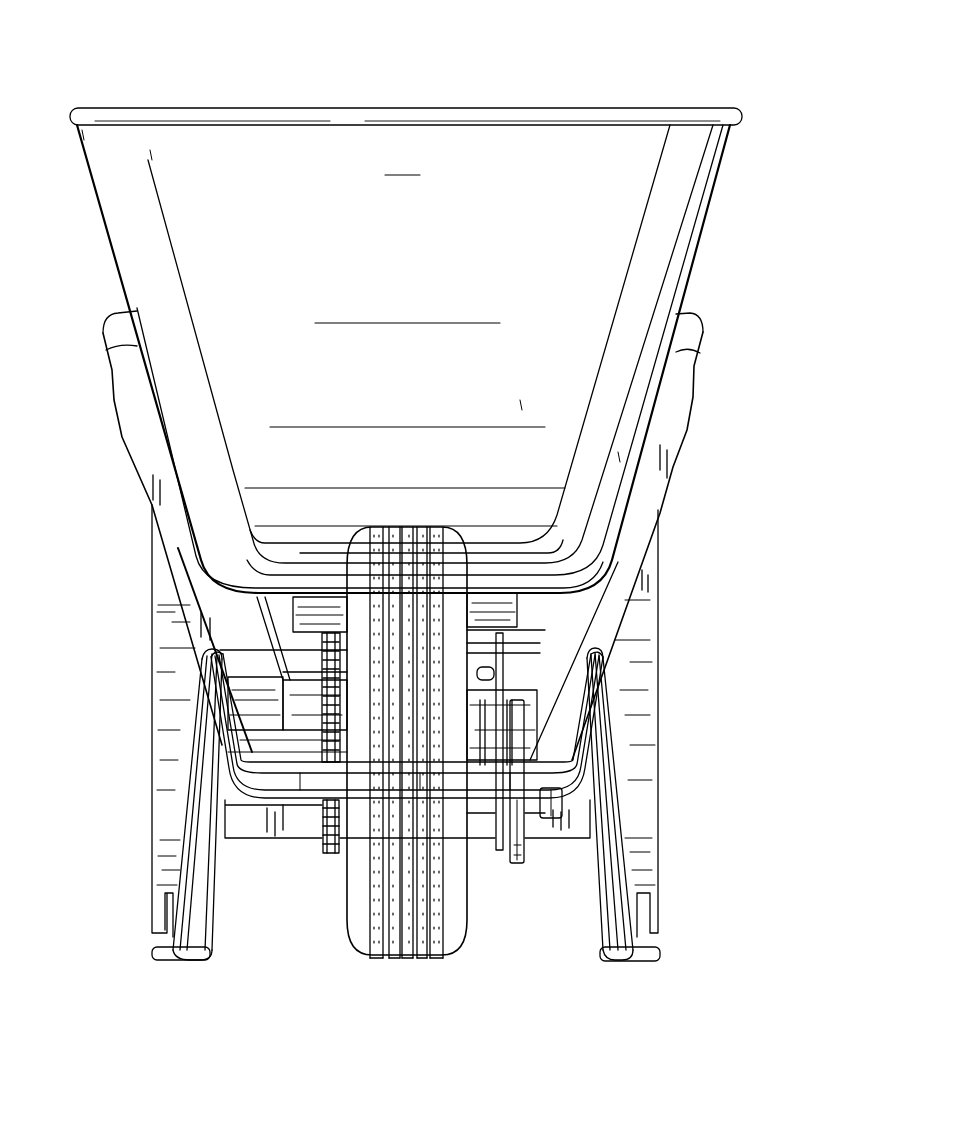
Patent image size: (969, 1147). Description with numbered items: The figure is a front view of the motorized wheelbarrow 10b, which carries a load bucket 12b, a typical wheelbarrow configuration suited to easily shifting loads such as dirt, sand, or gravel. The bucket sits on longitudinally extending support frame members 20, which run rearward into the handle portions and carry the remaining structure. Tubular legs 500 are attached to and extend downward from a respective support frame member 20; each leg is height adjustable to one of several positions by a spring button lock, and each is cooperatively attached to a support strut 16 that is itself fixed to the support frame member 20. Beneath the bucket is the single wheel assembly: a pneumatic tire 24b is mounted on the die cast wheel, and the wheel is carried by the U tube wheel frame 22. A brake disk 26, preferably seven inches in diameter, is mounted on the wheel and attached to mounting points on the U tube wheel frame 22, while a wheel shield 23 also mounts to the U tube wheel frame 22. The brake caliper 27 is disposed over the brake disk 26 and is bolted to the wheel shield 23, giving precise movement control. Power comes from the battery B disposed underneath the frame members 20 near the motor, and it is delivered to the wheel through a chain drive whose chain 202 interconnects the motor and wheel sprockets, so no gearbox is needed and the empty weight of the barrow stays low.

The wheelbarrow 10b is at (750, 373).
The load bucket 12b is at (549, 91).
The support frame member 20 is at (140, 462).
The tubular leg 500 is at (680, 748).
The support strut 16 is at (612, 812).
The brake caliper 27 is at (535, 733).
The battery B is at (540, 622).
The chain 202 is at (324, 845).
The disk 26 is at (500, 857).
The wheel shield 23 is at (525, 866).
The U tube wheel frame 22 is at (541, 820).
The pneumatic tire 24b is at (453, 940).